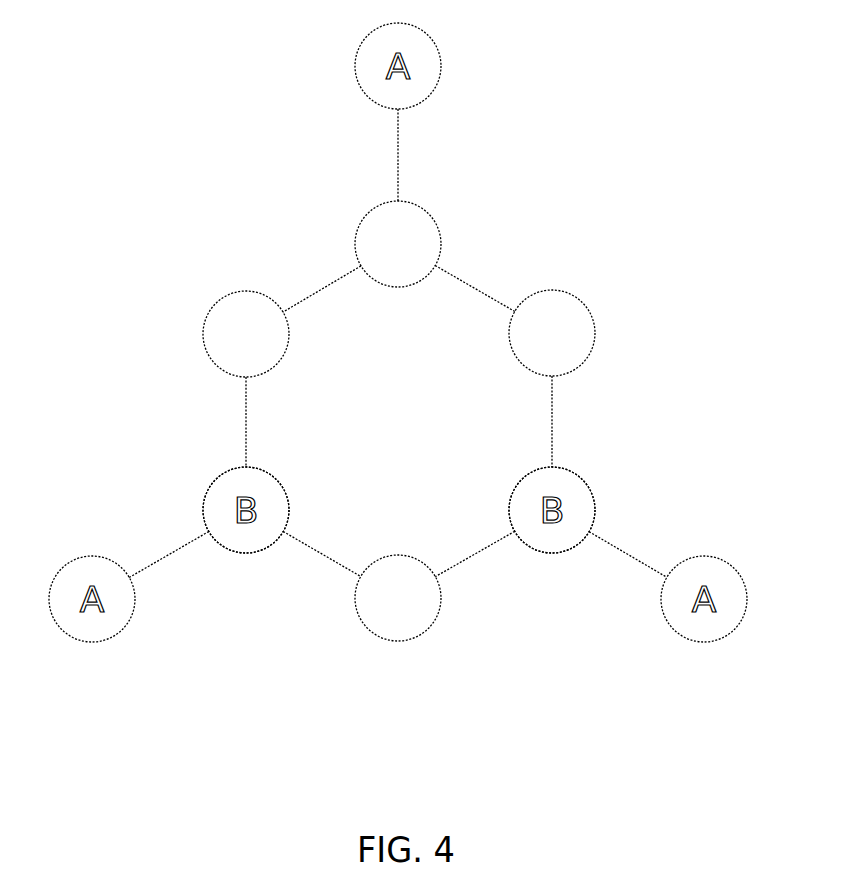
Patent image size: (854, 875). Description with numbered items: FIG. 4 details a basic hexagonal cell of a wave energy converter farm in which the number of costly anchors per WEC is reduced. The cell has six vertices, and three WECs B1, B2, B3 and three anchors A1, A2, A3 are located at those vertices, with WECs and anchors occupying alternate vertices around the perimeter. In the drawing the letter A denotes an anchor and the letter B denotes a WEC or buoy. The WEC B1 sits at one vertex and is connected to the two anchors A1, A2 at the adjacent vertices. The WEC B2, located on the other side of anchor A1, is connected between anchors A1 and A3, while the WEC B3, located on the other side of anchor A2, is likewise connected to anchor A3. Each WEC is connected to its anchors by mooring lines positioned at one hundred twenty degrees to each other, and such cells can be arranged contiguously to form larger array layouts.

The anchor A1 is at (224, 294).
The anchor A2 is at (591, 309).
The anchor A3 is at (428, 636).
The WEC B1 is at (437, 222).
The WEC B2 is at (211, 482).
The WEC B3 is at (588, 481).